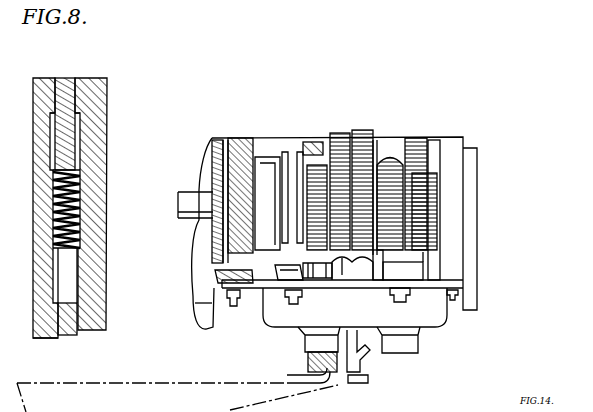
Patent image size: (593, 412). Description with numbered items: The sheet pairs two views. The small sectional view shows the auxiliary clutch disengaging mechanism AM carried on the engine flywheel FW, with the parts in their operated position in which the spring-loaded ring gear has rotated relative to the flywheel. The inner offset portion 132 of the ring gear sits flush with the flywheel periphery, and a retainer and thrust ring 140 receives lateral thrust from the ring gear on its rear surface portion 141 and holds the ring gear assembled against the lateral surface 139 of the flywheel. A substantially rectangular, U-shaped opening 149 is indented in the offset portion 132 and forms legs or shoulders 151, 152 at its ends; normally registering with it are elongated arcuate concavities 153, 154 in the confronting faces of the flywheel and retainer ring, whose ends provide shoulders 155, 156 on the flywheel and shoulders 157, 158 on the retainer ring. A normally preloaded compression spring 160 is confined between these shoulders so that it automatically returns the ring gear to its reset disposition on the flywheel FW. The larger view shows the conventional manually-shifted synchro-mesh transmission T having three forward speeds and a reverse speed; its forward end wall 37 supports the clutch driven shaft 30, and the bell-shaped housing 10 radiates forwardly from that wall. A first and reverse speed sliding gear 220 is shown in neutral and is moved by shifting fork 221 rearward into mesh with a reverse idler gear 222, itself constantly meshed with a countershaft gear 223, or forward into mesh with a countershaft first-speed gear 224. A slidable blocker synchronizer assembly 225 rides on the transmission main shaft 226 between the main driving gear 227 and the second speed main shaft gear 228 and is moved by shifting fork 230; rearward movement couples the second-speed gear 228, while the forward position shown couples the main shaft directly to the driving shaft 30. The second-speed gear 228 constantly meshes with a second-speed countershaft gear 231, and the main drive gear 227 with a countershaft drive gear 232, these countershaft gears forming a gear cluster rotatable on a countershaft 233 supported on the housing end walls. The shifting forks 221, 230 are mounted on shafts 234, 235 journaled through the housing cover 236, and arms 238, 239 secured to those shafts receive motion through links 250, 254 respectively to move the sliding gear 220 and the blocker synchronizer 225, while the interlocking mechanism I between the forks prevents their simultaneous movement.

In FIG. 8, the retainer and thrust ring 140 is at (38, 162).
In FIG. 8, the flywheel FW is at (94, 290).
In FIG. 8, the lateral surface 139 is at (68, 79).
In FIG. 8, the auxiliary clutch disengaging mechanism AM is at (60, 77).
In FIG. 8, the compression spring 160 is at (80, 211).
In FIG. 8, the shoulder 156 is at (82, 260).
In FIG. 8, the rear surface portion 141 is at (66, 335).
In FIG. 8, the inner offset portion 132 is at (60, 338).
In FIG. 8, the shoulder 157 is at (52, 116).
In FIG. 8, the arcuate concavity 154 is at (52, 129).
In FIG. 8, the leg or shoulder 151 is at (56, 150).
In FIG. 8, the shoulder 155 is at (58, 136).
In FIG. 8, the arcuate concavity 153 is at (80, 123).
In FIG. 8, the rectangular opening 149 is at (80, 176).
In FIG. 8, the shoulder 158 is at (54, 245).
In FIG. 8, the leg or shoulder 152 is at (56, 292).
In FIG. 14, the housing 10 is at (199, 244).
In FIG. 14, the clutch driven shaft 30 is at (182, 192).
In FIG. 14, the main driving gear 227 is at (220, 270).
In FIG. 14, the forward end wall 37 is at (217, 140).
In FIG. 14, the change-speed transmission T is at (223, 134).
In FIG. 14, the countershaft drive gear 232 is at (243, 137).
In FIG. 14, the blocker synchronizer assembly 225 is at (276, 156).
In FIG. 14, the countershaft 233 is at (314, 142).
In FIG. 14, the second-speed countershaft gear 231 is at (333, 140).
In FIG. 14, the second speed main shaft gear 228 is at (345, 163).
In FIG. 14, the countershaft first-speed gear 224 is at (361, 152).
In FIG. 14, the first and reverse speed sliding gear 220 is at (390, 158).
In FIG. 14, the countershaft gear 223 is at (415, 140).
In FIG. 14, the shifting fork 221 is at (405, 198).
In FIG. 14, the transmission main shaft 226 is at (428, 220).
In FIG. 14, the reverse idler gear 222 is at (423, 256).
In FIG. 14, the interlocking mechanism I is at (361, 283).
In FIG. 14, the shifting fork 230 is at (290, 272).
In FIG. 14, the housing cover 236 is at (443, 310).
In FIG. 14, the shaft 235 is at (312, 346).
In FIG. 14, the arm 239 is at (333, 373).
In FIG. 14, the link 254 is at (287, 376).
In FIG. 14, the shaft 234 is at (400, 354).
In FIG. 14, the arm 238 is at (375, 355).
In FIG. 14, the link 250 is at (368, 382).